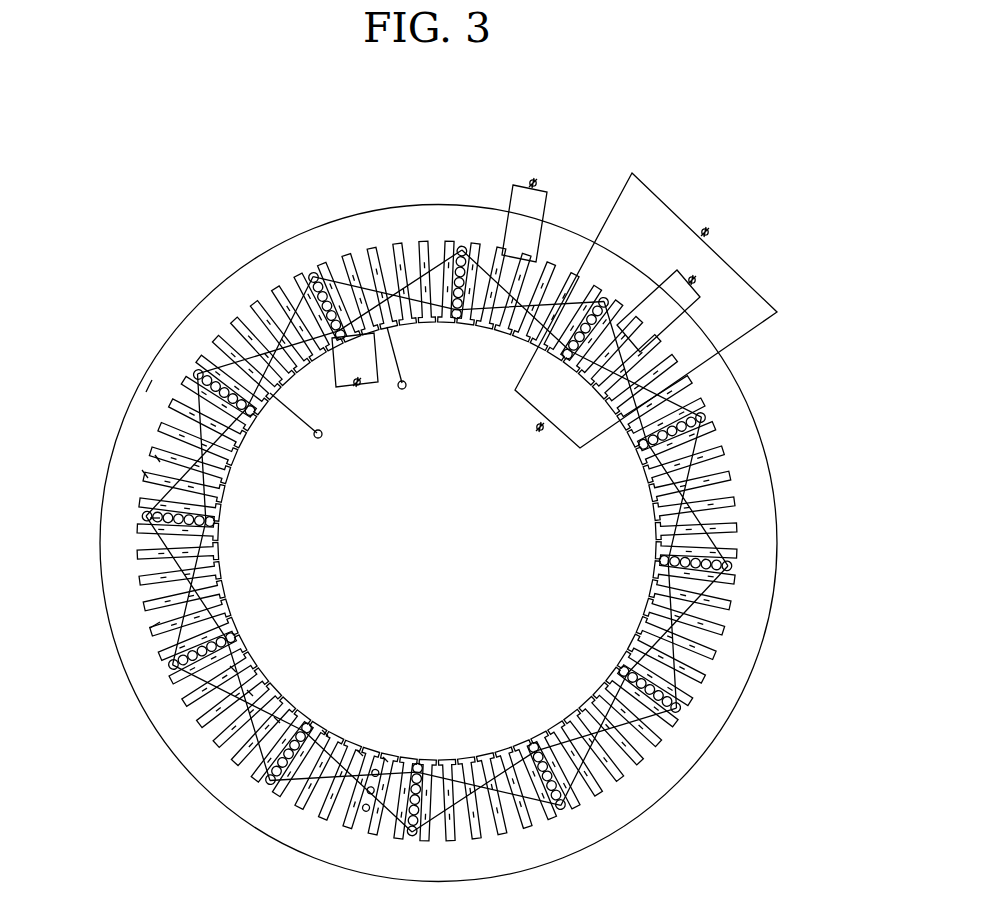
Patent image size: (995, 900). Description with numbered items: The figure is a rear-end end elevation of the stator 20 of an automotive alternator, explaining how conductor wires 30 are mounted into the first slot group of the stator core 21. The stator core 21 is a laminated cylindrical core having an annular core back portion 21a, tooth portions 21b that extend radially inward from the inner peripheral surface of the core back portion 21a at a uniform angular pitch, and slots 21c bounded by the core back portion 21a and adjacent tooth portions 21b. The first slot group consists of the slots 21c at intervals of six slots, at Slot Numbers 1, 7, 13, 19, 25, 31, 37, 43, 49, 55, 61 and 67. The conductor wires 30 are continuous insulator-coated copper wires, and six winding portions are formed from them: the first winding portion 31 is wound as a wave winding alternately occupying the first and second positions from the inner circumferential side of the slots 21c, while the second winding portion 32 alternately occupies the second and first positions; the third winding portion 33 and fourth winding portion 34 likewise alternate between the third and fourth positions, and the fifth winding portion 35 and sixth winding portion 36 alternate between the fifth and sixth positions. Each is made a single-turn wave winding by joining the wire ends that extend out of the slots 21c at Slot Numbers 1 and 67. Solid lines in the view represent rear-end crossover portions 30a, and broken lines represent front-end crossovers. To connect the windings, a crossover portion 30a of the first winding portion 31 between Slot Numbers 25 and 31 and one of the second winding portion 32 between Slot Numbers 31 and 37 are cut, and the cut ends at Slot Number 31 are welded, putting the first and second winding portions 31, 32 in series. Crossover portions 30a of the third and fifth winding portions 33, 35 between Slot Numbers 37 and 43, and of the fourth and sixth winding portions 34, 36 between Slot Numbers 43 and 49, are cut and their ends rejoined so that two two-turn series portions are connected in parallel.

The stator 20 is at (143, 186).
The stator core 21 is at (150, 355).
The core back portion 21a is at (150, 395).
The tooth portions 21b is at (145, 473).
The slots 21c is at (157, 457).
The conductor wires 30 is at (142, 520).
The crossover portion 30a is at (148, 625).
The slot number 1 is at (415, 785).
The slot number 7 is at (294, 747).
The slot number 13 is at (217, 644).
The slot number 19 is at (196, 522).
The slot number 25 is at (257, 403).
The first winding portion 31 is at (387, 757).
The slot number 37 is at (463, 300).
The slot number 43 is at (581, 343).
The slot number 49 is at (661, 440).
The slot number 55 is at (683, 564).
The slot number 61 is at (641, 683).
The slot number 67 is at (542, 765).
The second winding portion 32 is at (277, 720).
The third winding portion 33 is at (360, 753).
The fourth winding portion 34 is at (250, 693).
The fifth winding portion 35 is at (325, 733).
The sixth winding portion 36 is at (233, 668).